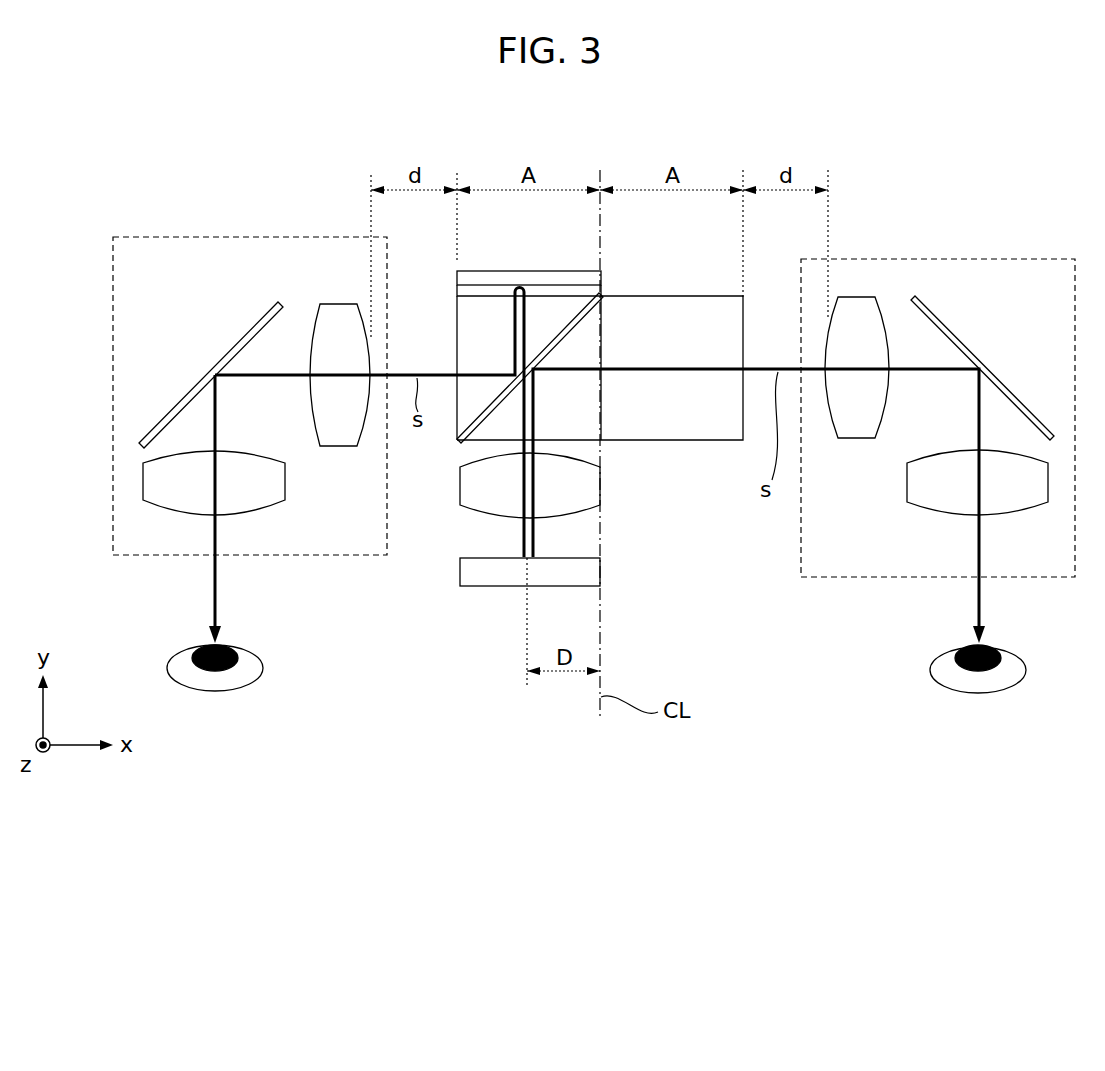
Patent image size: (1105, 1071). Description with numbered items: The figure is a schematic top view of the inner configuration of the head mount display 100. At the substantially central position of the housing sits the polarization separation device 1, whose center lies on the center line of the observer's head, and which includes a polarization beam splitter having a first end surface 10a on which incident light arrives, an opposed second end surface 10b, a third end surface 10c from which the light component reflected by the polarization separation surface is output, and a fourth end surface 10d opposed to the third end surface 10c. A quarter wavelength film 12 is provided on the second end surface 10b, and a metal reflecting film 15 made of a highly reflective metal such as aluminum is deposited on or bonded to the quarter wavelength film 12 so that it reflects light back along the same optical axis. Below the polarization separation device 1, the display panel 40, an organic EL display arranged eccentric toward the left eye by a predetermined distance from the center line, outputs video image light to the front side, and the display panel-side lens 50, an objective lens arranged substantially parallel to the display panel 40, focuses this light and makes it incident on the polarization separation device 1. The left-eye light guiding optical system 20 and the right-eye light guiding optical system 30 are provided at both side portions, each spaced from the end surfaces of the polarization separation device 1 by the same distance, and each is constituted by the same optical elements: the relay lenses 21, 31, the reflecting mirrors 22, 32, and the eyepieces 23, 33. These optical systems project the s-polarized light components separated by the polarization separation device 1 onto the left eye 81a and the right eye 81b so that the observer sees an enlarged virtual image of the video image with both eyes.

The head mount display 100 is at (960, 152).
The polarization separation device 1 is at (672, 296).
The first end surface 10a is at (460, 440).
The second end surface 10b is at (495, 296).
The third end surface 10c is at (603, 343).
The fourth end surface 10d is at (457, 332).
The quarter wavelength film 12 is at (601, 296).
The metal reflecting film 15 is at (558, 278).
The left-eye light guiding optical system 20 is at (193, 237).
The relay lens 21 is at (343, 313).
The reflecting mirror 22 is at (250, 336).
The eyepiece 23 is at (272, 486).
The right-eye light guiding optical system 30 is at (985, 259).
The relay lens 31 is at (862, 305).
The reflecting mirror 32 is at (952, 338).
The eyepiece 33 is at (925, 500).
The display panel 40 is at (588, 573).
The display panel-side lens 50 is at (588, 490).
The left eye 81a is at (263, 663).
The right eye 81b is at (947, 688).